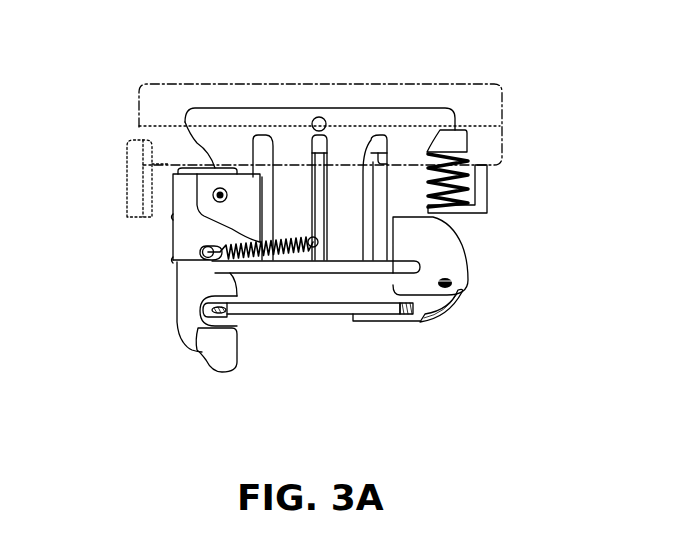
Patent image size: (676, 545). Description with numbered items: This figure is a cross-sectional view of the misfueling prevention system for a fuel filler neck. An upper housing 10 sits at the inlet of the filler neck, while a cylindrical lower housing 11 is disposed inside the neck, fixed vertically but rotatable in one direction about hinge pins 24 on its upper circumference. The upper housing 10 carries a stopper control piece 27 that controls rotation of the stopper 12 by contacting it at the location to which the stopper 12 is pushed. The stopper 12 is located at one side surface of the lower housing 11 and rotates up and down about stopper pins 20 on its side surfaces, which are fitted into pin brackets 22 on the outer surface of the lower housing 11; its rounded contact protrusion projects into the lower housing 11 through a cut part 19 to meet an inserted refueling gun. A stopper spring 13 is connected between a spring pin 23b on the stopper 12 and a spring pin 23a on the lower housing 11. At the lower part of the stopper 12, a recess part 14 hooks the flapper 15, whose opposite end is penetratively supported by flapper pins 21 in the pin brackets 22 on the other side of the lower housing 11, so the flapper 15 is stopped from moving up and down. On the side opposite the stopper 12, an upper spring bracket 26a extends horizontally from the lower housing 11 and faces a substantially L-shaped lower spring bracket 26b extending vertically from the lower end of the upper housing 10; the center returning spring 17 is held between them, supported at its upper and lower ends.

The upper housing 10 is at (487, 117).
The lower housing 11 is at (398, 133).
The stopper 12 is at (190, 282).
The stopper spring 13 is at (285, 274).
The recess part 14 is at (201, 355).
The flapper 15 is at (323, 315).
The center returning spring 17 is at (471, 182).
The cut part 19 is at (213, 232).
The stopper pin 20 is at (183, 170).
The flapper pin 21 is at (448, 297).
The pin bracket 22 is at (214, 190).
The spring pin 23a is at (178, 259).
The spring pin 23b is at (303, 274).
The hinge pin 24 is at (319, 117).
The upper spring bracket 26a is at (457, 127).
The lower spring bracket 26b is at (480, 208).
The stopper control piece 27 is at (135, 193).